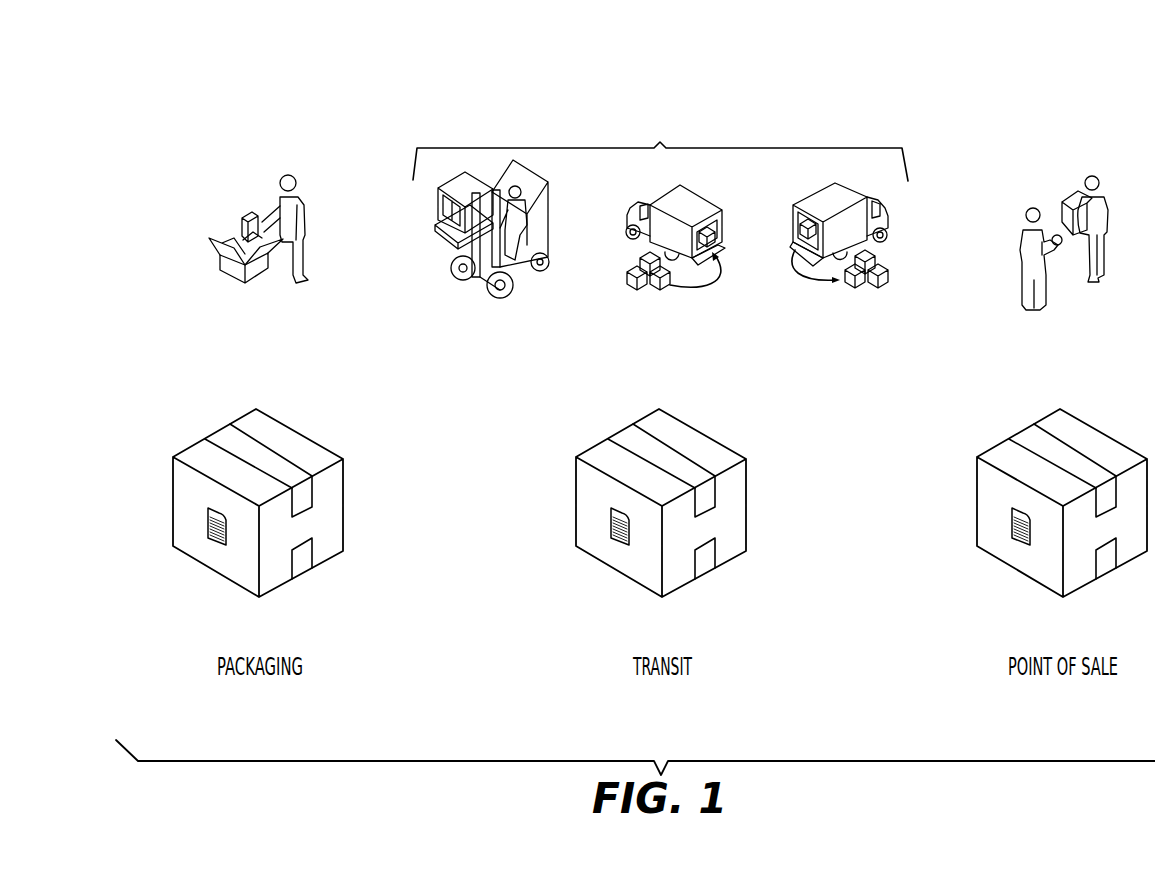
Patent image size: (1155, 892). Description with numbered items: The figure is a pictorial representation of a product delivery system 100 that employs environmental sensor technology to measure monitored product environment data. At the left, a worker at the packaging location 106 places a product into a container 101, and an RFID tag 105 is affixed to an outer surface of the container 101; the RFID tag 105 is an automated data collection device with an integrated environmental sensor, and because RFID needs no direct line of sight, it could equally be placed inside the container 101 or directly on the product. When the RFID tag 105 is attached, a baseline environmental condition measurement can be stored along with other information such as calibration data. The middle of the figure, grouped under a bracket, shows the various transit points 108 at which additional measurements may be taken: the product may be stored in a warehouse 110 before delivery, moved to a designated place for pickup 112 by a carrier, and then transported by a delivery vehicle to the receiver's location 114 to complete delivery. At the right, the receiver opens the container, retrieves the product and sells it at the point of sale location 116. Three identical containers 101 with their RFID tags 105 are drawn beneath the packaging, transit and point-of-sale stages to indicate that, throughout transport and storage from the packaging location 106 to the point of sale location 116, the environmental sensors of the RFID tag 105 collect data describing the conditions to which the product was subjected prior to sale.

The product delivery system 100 is at (222, 92).
The container 101 is at (291, 438).
The RFID tag 105 is at (215, 537).
The packaging location 106 is at (242, 207).
The transit points 108 is at (660, 226).
The warehouse 110 is at (478, 275).
The designated place for pickup 112 is at (653, 283).
The receiver's location 114 is at (860, 284).
The point of sale location 116 is at (1047, 190).